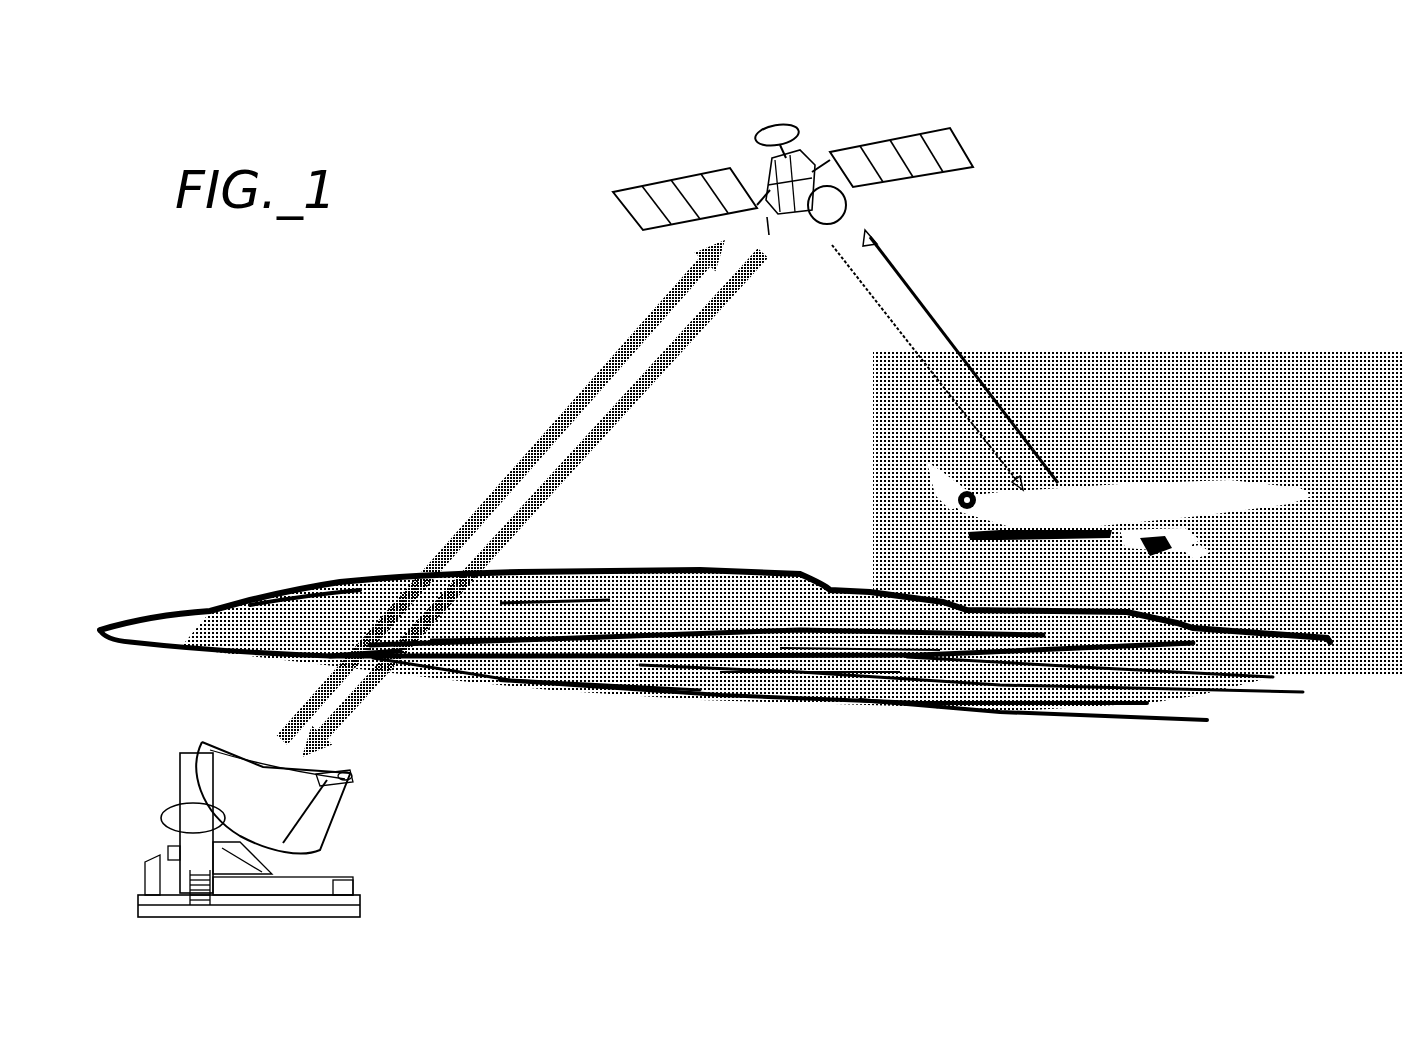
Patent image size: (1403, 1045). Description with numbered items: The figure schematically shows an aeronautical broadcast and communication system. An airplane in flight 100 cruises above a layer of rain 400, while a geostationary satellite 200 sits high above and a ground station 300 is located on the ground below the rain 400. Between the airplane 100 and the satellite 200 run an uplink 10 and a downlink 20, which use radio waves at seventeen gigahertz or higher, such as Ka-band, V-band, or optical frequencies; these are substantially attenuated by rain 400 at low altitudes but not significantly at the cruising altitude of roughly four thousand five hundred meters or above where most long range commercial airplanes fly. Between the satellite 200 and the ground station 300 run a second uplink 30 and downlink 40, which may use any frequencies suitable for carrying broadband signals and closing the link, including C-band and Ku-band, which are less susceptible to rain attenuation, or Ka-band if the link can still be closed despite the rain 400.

The uplink 10 is at (940, 327).
The downlink 20 is at (887, 313).
The uplink 30 is at (623, 353).
The downlink 40 is at (662, 378).
The airplane in flight 100 is at (1245, 467).
The geostationary satellite 200 is at (806, 110).
The ground station 300 is at (333, 810).
The rain 400 is at (742, 703).